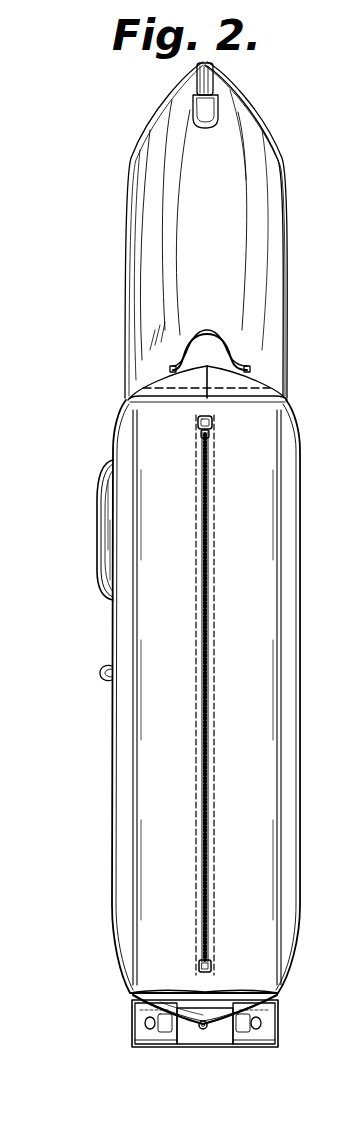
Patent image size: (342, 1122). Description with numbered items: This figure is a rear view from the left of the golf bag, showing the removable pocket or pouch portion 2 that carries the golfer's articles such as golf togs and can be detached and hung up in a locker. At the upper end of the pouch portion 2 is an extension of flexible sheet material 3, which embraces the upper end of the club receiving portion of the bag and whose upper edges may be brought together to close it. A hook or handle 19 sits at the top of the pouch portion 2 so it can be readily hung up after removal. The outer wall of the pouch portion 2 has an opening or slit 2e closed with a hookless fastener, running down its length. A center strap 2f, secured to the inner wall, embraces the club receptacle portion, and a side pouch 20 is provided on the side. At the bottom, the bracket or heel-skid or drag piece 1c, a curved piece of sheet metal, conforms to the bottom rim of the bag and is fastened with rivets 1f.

The extension of flexible sheet material 3 is at (268, 168).
The hook or handle 19 is at (226, 320).
The removable pocket or pouch portion 2 is at (291, 557).
The opening or slit closed with a hookless fastener 2e is at (207, 697).
The side pouch 20 is at (103, 520).
The center strap 2f is at (103, 680).
The bracket or heel-skid or drag piece 1c is at (218, 1042).
The rivets 1f is at (202, 1029).